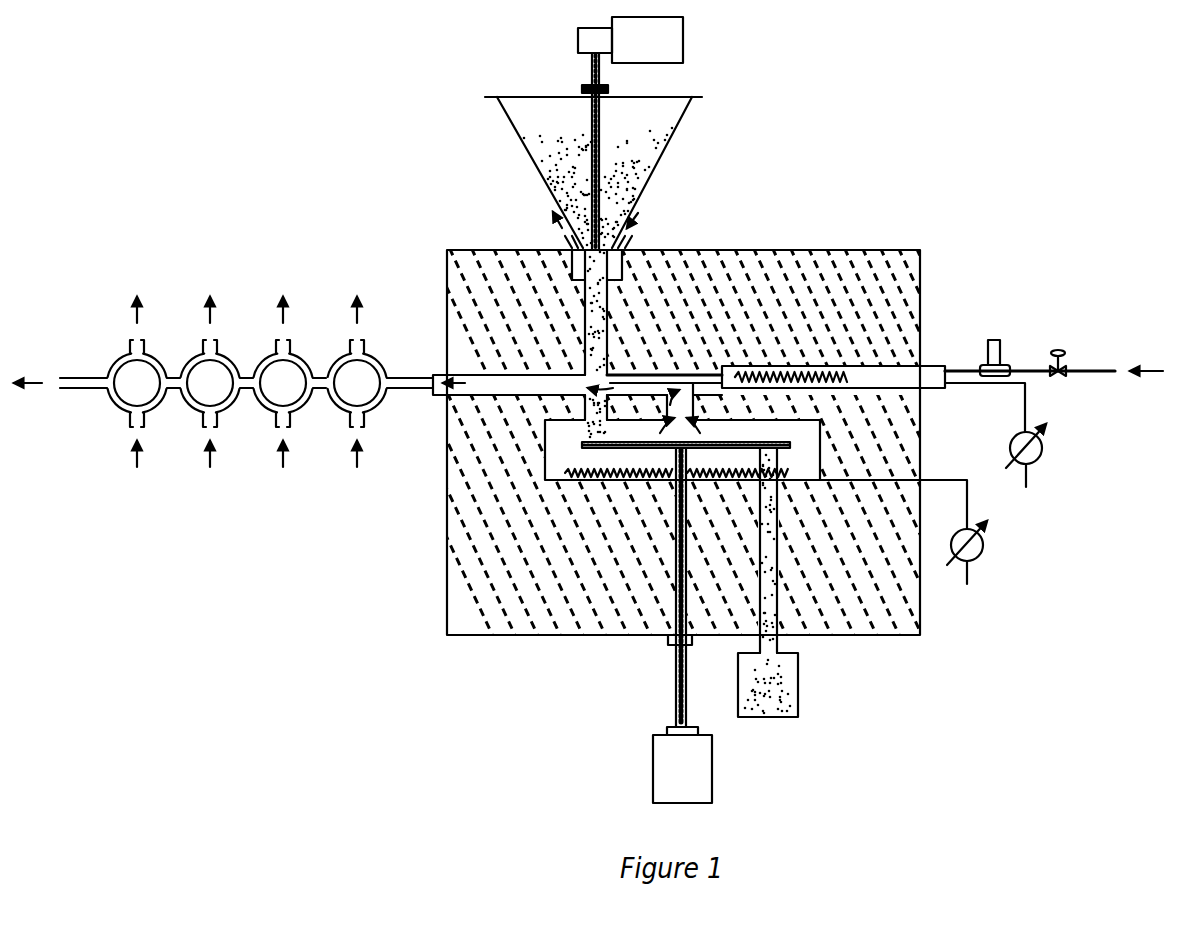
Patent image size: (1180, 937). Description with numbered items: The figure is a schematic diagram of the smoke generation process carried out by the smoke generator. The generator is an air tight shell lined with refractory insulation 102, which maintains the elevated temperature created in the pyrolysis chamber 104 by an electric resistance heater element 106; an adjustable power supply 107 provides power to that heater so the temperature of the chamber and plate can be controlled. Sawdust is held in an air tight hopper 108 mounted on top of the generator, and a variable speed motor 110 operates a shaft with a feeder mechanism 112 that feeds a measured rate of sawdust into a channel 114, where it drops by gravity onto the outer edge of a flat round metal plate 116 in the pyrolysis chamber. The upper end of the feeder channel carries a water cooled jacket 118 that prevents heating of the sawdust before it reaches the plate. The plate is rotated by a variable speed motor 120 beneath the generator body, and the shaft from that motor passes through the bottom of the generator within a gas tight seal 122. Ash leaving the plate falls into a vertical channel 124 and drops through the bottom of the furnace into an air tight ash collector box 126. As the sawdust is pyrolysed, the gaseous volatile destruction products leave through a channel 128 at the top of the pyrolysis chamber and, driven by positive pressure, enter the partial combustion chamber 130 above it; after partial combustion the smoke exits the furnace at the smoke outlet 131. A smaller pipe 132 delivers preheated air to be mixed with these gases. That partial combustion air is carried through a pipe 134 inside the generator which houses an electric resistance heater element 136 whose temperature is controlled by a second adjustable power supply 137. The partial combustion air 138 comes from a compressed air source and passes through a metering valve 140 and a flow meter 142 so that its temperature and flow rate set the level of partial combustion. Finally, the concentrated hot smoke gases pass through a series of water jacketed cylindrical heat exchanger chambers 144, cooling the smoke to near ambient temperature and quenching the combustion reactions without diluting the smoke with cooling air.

The refractory insulation 102 is at (878, 290).
The pyrolysis chamber 104 is at (555, 450).
The electric resistance heater element 106 is at (568, 476).
The adjustable power supply 107 is at (978, 555).
The air tight hopper 108 is at (648, 170).
The variable speed motor 110 is at (683, 40).
The feeder mechanism 112 is at (590, 160).
The channel 114 is at (603, 328).
The flat round metal plate 116 is at (790, 445).
The water cooled jacket 118 is at (624, 264).
The variable speed motor 120 is at (712, 767).
The gas tight seal 122 is at (668, 645).
The vertical channel 124 is at (777, 560).
The air tight ash collector box 126 is at (798, 680).
The channel 128 is at (612, 401).
The partial combustion chamber 130 is at (563, 392).
The smoke outlet 131 is at (433, 378).
The smaller pipe 132 is at (710, 373).
The pipe 134 is at (930, 362).
The electric resistance heater element 136 is at (843, 373).
The second adjustable power supply 137 is at (1042, 458).
The partial combustion air 138 is at (1147, 378).
The metering valve 140 is at (1066, 352).
The flow meter 142 is at (1000, 343).
The water jacketed cylindrical heat exchanger chambers 144 is at (342, 353).